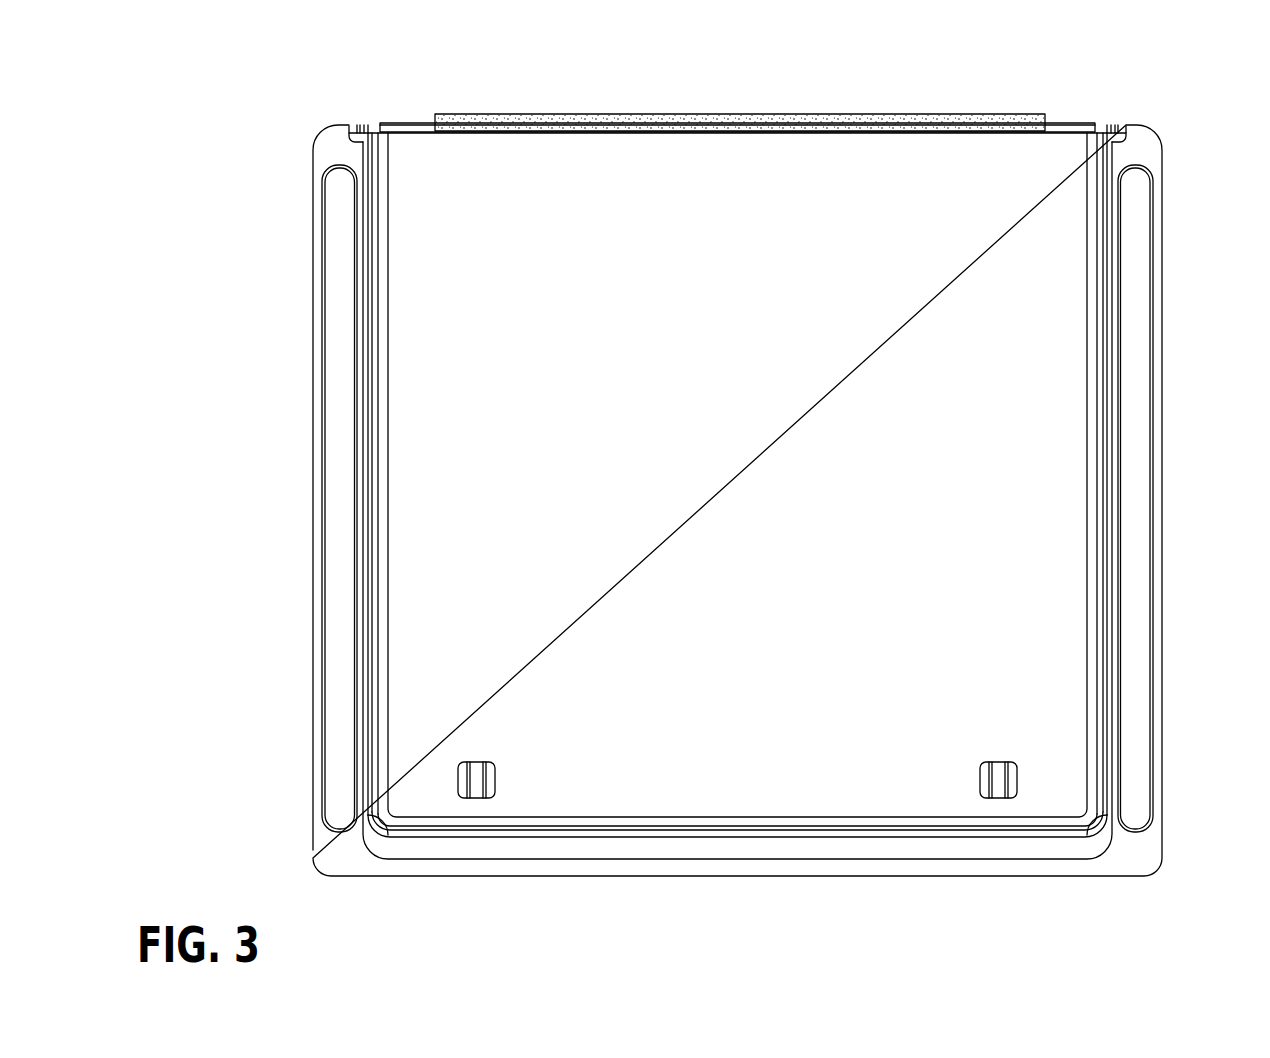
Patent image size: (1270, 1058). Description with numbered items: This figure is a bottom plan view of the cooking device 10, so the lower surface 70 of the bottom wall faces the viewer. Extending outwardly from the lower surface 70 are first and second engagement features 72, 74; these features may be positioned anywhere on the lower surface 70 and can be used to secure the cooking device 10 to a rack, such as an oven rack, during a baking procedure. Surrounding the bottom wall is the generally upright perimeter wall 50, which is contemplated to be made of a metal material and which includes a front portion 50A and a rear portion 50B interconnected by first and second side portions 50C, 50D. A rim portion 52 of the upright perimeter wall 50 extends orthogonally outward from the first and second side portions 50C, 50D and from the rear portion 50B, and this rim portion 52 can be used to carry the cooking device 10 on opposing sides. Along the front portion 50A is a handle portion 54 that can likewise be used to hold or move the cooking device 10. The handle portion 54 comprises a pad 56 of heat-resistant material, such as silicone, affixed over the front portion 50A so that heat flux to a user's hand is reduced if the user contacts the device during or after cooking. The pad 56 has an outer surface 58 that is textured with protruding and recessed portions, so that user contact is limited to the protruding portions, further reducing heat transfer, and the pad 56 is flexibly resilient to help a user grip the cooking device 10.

The cooking device 10 is at (1203, 216).
The upright perimeter wall 50 is at (1126, 702).
The front portion 50A is at (1061, 124).
The rear portion 50B is at (709, 838).
The first side portion 50C is at (368, 450).
The second side portion 50D is at (1105, 492).
The rim portion 52 is at (1140, 850).
The handle portion 54 is at (730, 112).
The pad 56 is at (542, 113).
The outer surface 58 is at (651, 121).
The lower surface 70 is at (557, 604).
The first engagement feature 72 is at (500, 781).
The second engagement feature 74 is at (976, 782).